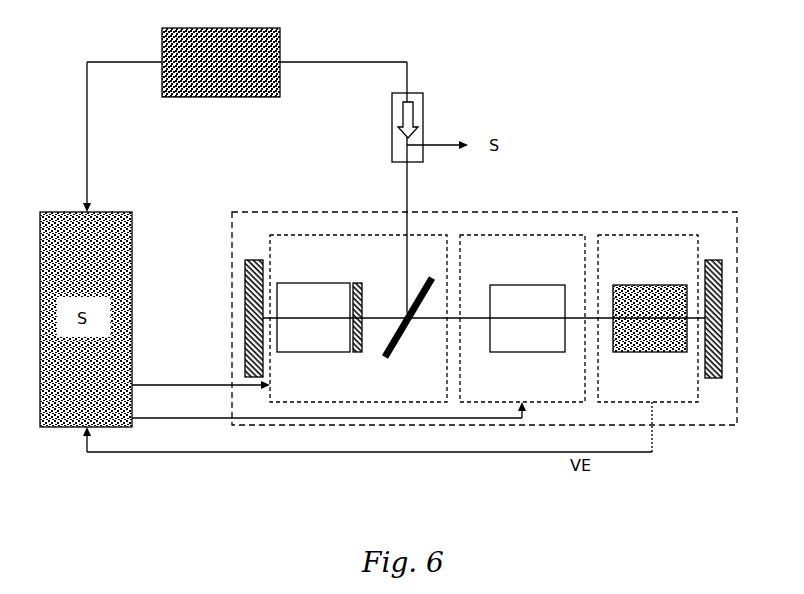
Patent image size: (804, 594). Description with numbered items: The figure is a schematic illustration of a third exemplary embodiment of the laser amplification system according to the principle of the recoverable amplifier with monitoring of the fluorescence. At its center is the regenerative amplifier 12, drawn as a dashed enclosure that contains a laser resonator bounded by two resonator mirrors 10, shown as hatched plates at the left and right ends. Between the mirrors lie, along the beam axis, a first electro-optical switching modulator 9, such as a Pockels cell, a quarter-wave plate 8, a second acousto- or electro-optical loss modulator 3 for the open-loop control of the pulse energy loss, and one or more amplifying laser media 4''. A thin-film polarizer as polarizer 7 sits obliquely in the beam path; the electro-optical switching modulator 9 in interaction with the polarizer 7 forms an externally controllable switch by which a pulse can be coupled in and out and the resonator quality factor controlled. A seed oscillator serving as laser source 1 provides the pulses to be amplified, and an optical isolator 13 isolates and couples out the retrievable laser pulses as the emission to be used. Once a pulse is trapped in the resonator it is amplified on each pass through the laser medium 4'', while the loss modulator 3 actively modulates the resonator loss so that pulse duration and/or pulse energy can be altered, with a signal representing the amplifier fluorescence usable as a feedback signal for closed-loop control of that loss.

The laser source 1 is at (243, 40).
The optical isolator 13 is at (416, 110).
The resonator mirror 10 is at (245, 288).
The electro-optical switching modulator 9 is at (325, 297).
The quarter-wave plate 8 is at (355, 352).
The polarizer 7 is at (395, 348).
The loss modulator 3 is at (533, 308).
The amplifying laser medium 4'' is at (626, 262).
The regenerative amplifier 12 is at (665, 427).